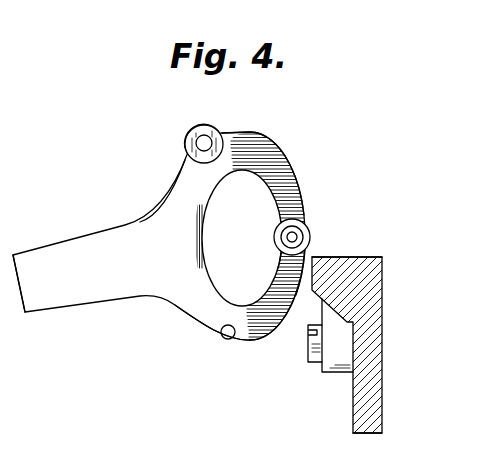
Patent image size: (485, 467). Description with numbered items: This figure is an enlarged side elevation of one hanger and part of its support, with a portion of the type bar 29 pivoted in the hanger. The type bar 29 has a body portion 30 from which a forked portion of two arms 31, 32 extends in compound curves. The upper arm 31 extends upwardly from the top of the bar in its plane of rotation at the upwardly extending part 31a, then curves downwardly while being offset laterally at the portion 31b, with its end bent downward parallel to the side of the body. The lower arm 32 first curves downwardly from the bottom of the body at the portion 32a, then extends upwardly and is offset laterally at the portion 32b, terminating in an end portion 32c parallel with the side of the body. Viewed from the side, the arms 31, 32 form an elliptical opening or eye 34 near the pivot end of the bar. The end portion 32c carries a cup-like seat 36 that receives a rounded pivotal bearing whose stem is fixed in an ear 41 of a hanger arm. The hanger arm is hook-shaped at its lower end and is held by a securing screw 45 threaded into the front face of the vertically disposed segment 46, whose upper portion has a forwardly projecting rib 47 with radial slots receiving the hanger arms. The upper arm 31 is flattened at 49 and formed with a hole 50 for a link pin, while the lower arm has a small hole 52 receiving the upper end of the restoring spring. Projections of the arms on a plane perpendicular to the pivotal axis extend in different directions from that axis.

The type bar 29 is at (162, 232).
The body portion 30 is at (40, 250).
The arm 31 is at (246, 133).
The upwardly extending part of arm 31a is at (182, 174).
The downwardly and laterally extending portion of arm 31b is at (292, 184).
The arm 32 is at (253, 341).
The downwardly extending portion of arm 32a is at (199, 330).
The upwardly and laterally extending portion of arm 32b is at (306, 303).
The end portion of arm 32c is at (281, 243).
The elliptical opening or eye 34 is at (242, 238).
The cup-like depression or seat 36 is at (353, 256).
The ear 41 is at (326, 246).
The securing screw 45 is at (322, 354).
The hanger support or segment 46 is at (362, 434).
The forwardly projecting rib 47 is at (354, 256).
The flattened portion 49 is at (213, 135).
The hole 50 is at (203, 136).
The hole 52 is at (228, 340).